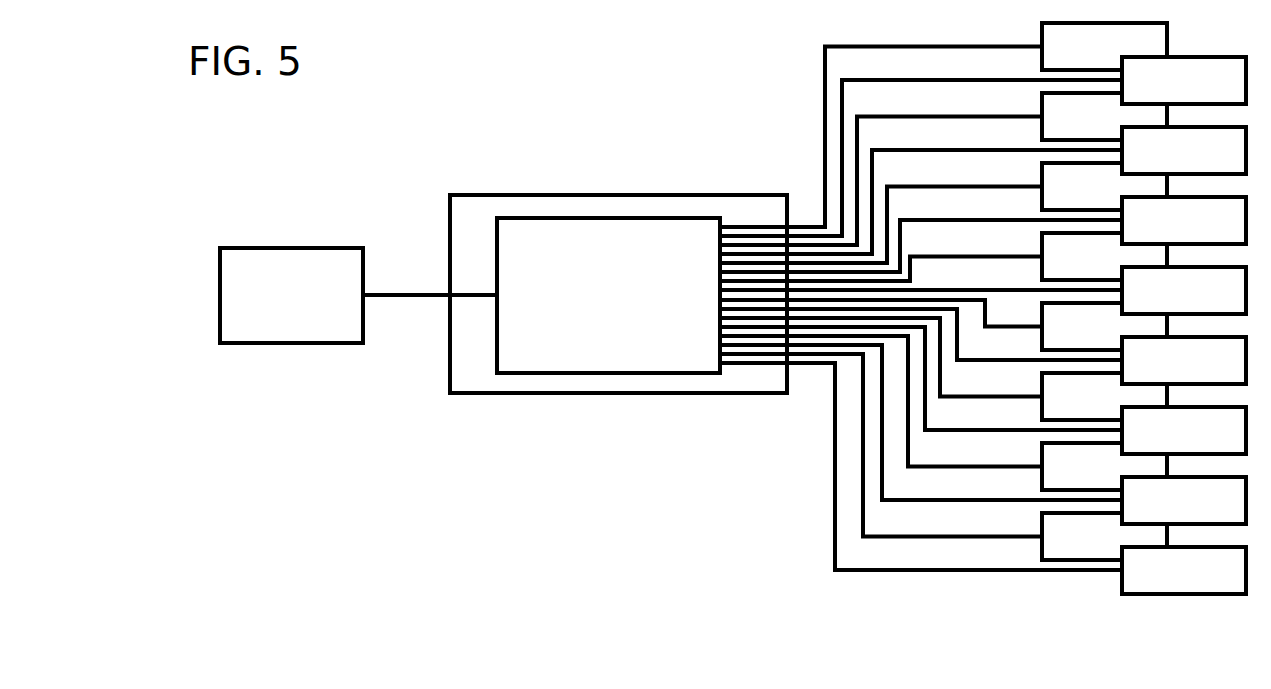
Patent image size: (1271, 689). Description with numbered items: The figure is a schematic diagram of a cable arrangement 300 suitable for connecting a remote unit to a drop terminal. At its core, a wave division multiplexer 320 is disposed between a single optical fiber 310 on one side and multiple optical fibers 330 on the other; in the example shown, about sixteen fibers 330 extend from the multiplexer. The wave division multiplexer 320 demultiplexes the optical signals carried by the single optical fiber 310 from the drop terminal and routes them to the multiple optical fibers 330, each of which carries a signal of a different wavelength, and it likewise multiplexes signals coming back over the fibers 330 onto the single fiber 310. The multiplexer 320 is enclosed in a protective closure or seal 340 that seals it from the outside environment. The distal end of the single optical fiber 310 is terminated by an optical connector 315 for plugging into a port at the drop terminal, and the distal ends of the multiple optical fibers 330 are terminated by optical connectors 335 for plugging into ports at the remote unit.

The cable arrangement 300 is at (472, 469).
The single optical fiber 310 is at (410, 356).
The optical connector 315 is at (313, 311).
The wave division multiplexer 320 is at (632, 306).
The multiple optical fibers 330 is at (852, 140).
The optical connectors 335 is at (1144, 308).
The protective closure or seal 340 is at (618, 329).